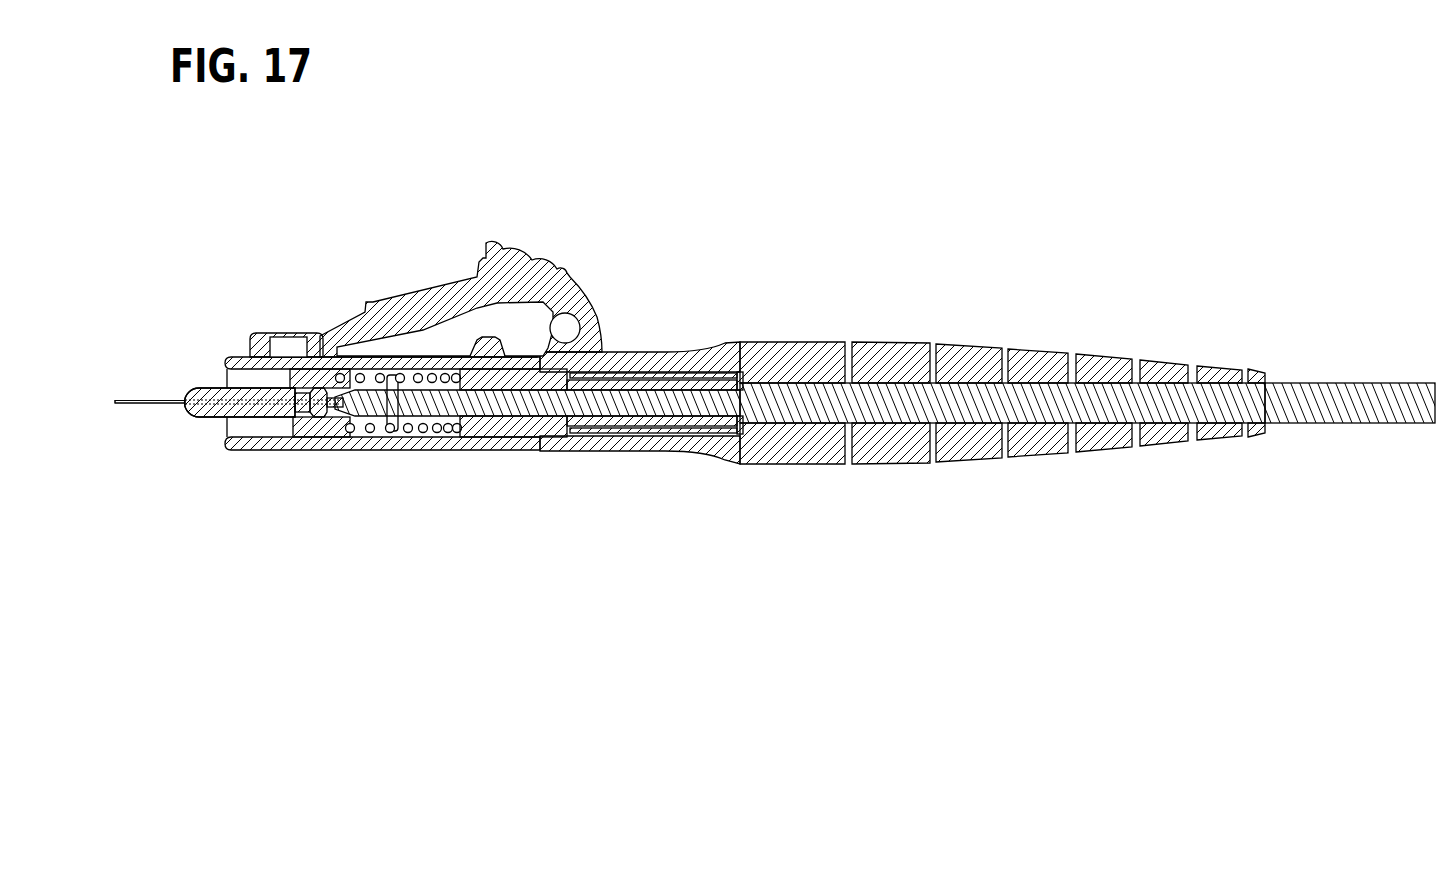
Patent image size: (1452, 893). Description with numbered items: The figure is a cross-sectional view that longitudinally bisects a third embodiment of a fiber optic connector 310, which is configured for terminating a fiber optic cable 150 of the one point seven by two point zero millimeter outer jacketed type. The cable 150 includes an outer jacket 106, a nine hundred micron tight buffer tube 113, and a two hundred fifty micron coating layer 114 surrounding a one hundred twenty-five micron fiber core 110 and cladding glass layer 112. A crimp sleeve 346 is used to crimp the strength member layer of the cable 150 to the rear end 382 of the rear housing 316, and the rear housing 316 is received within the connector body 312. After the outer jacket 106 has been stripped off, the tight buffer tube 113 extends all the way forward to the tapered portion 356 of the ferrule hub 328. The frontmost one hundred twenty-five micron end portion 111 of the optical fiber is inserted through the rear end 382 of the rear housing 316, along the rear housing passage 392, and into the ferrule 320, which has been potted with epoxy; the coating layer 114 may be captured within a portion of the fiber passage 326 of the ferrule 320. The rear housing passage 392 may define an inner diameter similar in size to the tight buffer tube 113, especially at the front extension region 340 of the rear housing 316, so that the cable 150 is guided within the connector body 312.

The fiber optic connector 310 is at (843, 278).
The fiber core 110 is at (153, 404).
The cladding glass layer 112 is at (150, 402).
The frontmost end portion 111 is at (223, 402).
The ferrule 320 is at (253, 396).
The fiber passage 326 is at (283, 404).
The ferrule hub 328 is at (340, 417).
The coating layer 114 is at (311, 402).
The tapered portion 356 is at (368, 386).
The front extension region 340 is at (417, 420).
The tight buffer tube 113 is at (483, 408).
The rear housing 316 is at (522, 377).
The crimp sleeve 346 is at (627, 373).
The rear housing passage 392 is at (630, 414).
The rear end 382 is at (705, 385).
The connector body 312 is at (593, 340).
The outer jacket 106 is at (948, 403).
The fiber optic cable 150 is at (1313, 424).